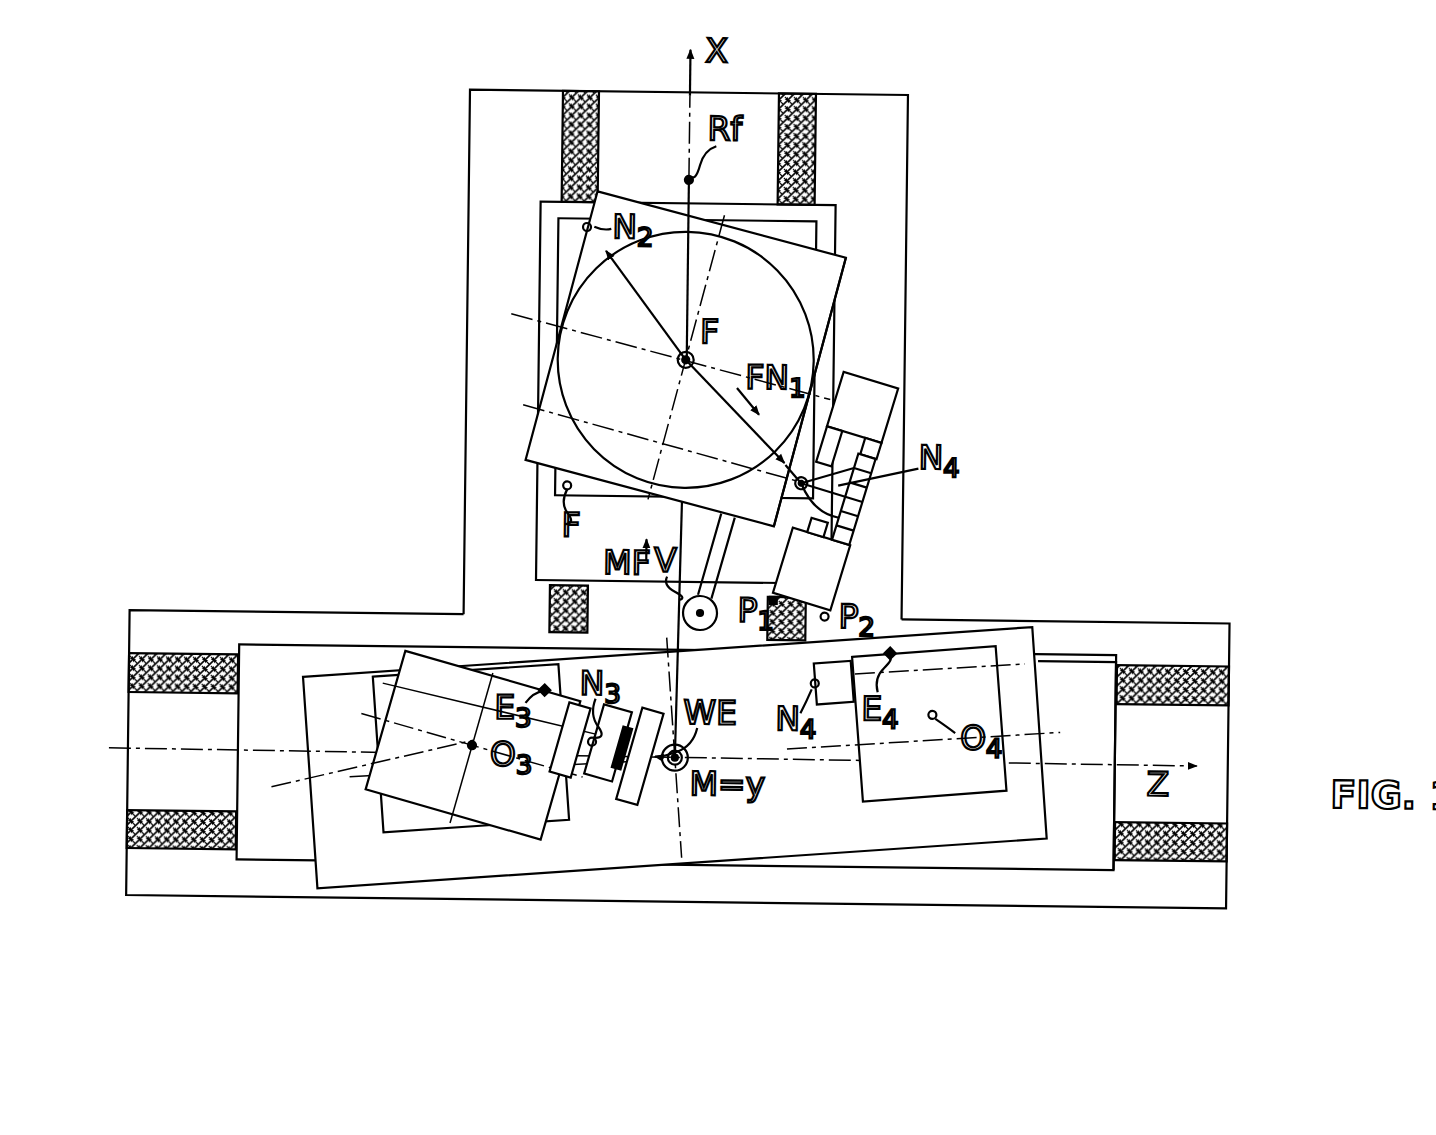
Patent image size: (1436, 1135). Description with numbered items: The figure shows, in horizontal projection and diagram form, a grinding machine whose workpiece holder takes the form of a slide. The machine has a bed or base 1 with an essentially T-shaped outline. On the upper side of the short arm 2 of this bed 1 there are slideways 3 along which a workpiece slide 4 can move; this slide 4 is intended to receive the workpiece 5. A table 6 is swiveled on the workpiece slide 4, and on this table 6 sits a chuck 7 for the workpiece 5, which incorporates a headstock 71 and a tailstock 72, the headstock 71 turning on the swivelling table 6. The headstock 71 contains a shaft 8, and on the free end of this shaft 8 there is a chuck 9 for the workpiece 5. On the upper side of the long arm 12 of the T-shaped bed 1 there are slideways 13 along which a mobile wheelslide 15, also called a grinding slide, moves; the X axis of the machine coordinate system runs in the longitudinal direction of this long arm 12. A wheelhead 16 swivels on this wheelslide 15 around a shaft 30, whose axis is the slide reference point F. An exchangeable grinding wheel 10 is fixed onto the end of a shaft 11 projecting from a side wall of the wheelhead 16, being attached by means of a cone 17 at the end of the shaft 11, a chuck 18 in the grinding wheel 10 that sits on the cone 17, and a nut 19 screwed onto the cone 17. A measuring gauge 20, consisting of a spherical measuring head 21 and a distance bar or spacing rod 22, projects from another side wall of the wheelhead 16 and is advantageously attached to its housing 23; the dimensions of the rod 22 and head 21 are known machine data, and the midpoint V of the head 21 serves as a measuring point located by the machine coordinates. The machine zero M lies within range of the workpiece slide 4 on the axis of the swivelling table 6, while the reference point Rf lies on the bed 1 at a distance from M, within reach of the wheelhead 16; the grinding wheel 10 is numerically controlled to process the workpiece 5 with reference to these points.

The bed or base 1 is at (972, 150).
The short arm 2 is at (1172, 616).
The slideways 3 is at (1232, 684).
The workpiece slide 4 is at (1074, 652).
The workpiece 5 is at (647, 795).
The table 6 is at (330, 668).
The chuck 7 is at (412, 838).
The shaft 8 is at (569, 762).
The chuck 9 is at (612, 718).
The grinding wheel 10 is at (905, 410).
The shaft 11 is at (842, 564).
The long arm 12 is at (910, 230).
The slideways 13 is at (572, 91).
The wheelslide 15 is at (533, 228).
The wheelhead 16 is at (520, 406).
The cone 17 is at (922, 472).
The chuck 18 is at (897, 436).
The nut 19 is at (908, 472).
The measuring gauge 20 is at (714, 630).
The spherical measuring head 21 is at (698, 613).
The distance bar or spacing rod 22 is at (716, 530).
The housing 23 is at (839, 262).
The shaft 30 is at (676, 363).
The headstock 71 is at (415, 675).
The tailstock 72 is at (980, 657).